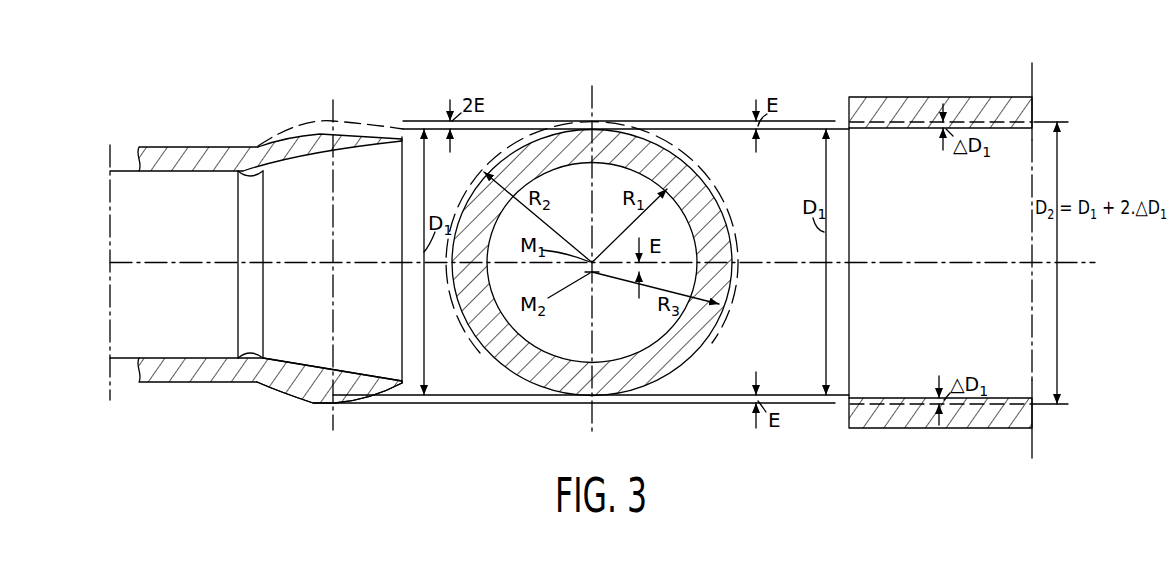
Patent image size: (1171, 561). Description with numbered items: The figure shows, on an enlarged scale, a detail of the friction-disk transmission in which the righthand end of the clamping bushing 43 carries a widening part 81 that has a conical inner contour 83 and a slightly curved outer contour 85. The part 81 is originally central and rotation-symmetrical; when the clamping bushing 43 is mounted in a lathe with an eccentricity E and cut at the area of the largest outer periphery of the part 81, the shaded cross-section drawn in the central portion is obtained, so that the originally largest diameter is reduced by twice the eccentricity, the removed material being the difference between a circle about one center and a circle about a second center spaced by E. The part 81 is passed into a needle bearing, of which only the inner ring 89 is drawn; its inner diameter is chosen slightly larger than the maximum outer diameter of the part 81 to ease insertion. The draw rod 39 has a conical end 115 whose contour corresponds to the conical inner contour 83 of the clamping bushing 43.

The draw rod 39 is at (139, 328).
The clamping bushing 43 is at (184, 153).
The widening part 81 is at (292, 377).
The conical inner contour 83 is at (300, 170).
The slightly curved outer contour 85 is at (309, 118).
The inner ring 89 is at (990, 102).
The conical end 115 is at (370, 370).